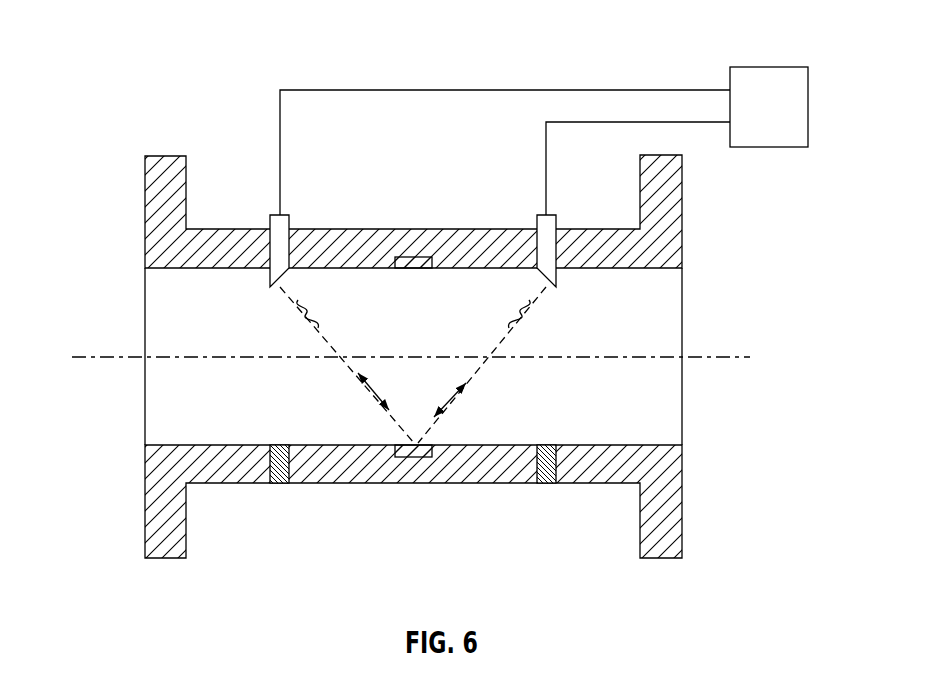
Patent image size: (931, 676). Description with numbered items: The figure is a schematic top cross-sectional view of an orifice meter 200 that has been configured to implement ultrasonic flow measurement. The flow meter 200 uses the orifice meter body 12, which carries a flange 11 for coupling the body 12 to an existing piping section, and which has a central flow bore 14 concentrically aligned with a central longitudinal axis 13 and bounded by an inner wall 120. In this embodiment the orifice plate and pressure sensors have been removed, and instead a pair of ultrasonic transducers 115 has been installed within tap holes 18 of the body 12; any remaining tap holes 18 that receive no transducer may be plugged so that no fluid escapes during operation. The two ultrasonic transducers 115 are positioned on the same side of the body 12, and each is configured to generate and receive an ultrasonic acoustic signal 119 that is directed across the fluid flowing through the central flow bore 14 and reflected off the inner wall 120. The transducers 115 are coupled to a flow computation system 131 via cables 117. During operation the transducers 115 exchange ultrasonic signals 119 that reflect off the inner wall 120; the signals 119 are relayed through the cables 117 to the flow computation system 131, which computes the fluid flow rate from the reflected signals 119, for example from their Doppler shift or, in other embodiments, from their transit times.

The orifice meter 200 is at (157, 61).
The flange 11 is at (145, 190).
The body 12 is at (385, 229).
The central longitudinal axis 13 is at (100, 356).
The central flow bore 14 is at (161, 417).
The tap holes 18 is at (267, 239).
The ultrasonic transducers 115 is at (290, 226).
The cables 117 is at (279, 131).
The ultrasonic acoustic signal 119 is at (345, 358).
The inner wall 120 is at (613, 445).
The flow computation system 131 is at (790, 118).